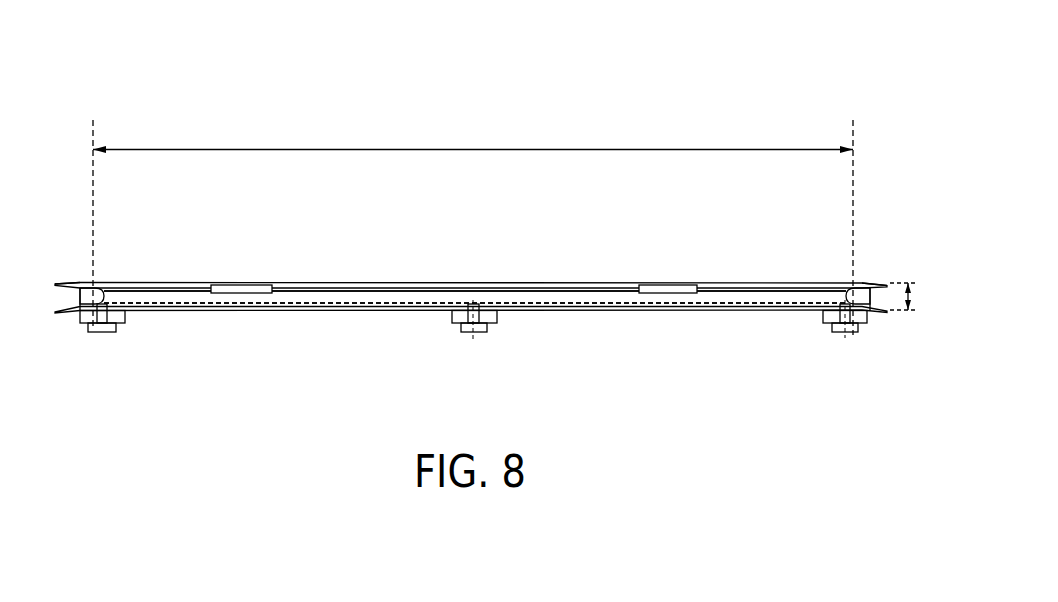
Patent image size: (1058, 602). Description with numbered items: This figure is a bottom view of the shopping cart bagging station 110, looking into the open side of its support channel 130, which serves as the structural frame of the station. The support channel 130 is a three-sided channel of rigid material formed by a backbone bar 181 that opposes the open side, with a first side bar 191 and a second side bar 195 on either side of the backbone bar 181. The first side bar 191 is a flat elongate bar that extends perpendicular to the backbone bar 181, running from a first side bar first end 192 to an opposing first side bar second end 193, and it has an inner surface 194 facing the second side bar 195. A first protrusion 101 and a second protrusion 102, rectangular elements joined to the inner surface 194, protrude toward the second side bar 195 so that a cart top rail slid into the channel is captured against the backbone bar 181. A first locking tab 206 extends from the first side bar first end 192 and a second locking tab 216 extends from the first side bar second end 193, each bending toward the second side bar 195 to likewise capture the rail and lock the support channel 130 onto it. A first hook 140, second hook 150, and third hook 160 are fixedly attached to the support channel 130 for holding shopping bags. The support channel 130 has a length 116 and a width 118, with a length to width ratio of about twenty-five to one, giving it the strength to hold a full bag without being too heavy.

The shopping cart bagging station 110 is at (542, 78).
The length 116 is at (245, 149).
The width 118 is at (910, 296).
The support channel 130 is at (626, 357).
The first hook 140 is at (845, 332).
The second hook 150 is at (100, 321).
The third hook 160 is at (473, 332).
The backbone bar 181 is at (557, 297).
The first side bar 191 is at (413, 283).
The first side bar first end 192 is at (868, 282).
The first side bar second end 193 is at (77, 282).
The inner surface 194 is at (178, 283).
The second side bar 195 is at (222, 309).
The first protrusion 101 is at (663, 290).
The second protrusion 102 is at (230, 289).
The first locking tab 206 is at (877, 282).
The second locking tab 216 is at (71, 282).